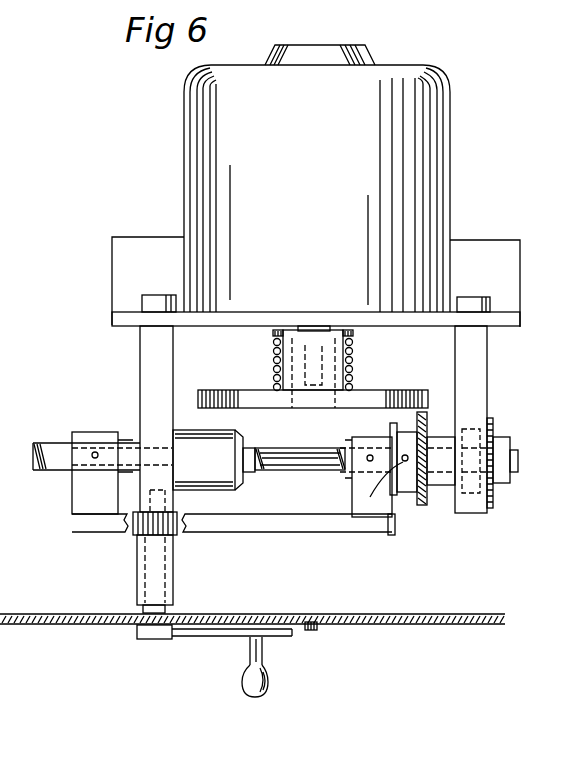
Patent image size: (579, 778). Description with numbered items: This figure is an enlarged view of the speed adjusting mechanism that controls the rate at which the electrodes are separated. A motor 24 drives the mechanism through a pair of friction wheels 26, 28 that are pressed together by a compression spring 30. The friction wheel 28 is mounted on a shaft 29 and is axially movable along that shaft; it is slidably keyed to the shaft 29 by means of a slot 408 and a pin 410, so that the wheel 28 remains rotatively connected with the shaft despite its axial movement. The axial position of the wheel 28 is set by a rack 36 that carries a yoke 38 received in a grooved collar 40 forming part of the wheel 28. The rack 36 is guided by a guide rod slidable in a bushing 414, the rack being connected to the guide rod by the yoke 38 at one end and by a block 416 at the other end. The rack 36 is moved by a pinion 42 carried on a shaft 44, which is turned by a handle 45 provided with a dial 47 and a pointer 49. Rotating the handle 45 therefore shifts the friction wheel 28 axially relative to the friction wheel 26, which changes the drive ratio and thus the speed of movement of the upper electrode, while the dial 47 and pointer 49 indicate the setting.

The motor 24 is at (433, 160).
The friction wheel 26 is at (406, 396).
The friction wheel 28 is at (425, 500).
The shaft 29 is at (316, 447).
The compression spring 30 is at (356, 352).
The rack 36 is at (292, 534).
The yoke 38 is at (390, 534).
The grooved collar 40 is at (405, 494).
The pinion 42 is at (136, 536).
The shaft 44 is at (172, 612).
The handle 45 is at (264, 692).
The dial 47 is at (312, 632).
The pointer 49 is at (284, 639).
The slot 408 is at (310, 472).
The pin 410 is at (366, 477).
The bushing 414 is at (232, 432).
The block 416 is at (92, 502).